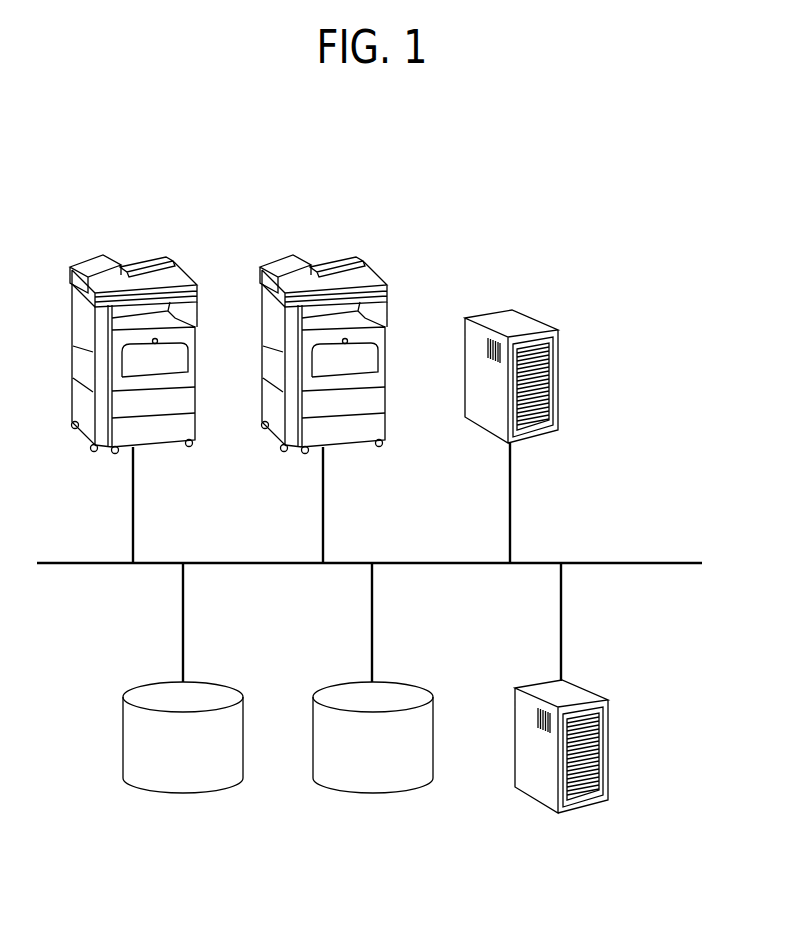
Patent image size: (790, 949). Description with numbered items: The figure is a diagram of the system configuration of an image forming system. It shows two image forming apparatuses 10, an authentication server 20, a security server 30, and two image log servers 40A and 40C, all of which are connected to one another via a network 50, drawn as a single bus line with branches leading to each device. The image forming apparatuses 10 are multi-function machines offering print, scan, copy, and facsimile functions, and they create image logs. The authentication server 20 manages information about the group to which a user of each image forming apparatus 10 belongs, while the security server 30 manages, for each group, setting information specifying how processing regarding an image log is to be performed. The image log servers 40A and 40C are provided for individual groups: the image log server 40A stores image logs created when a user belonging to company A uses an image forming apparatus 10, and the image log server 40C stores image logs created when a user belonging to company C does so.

The image forming apparatus 10 is at (142, 259).
The authentication server 20 is at (518, 312).
The security server 30 is at (588, 811).
The image log server 40A is at (192, 794).
The image log server 40C is at (388, 794).
The network 50 is at (625, 562).